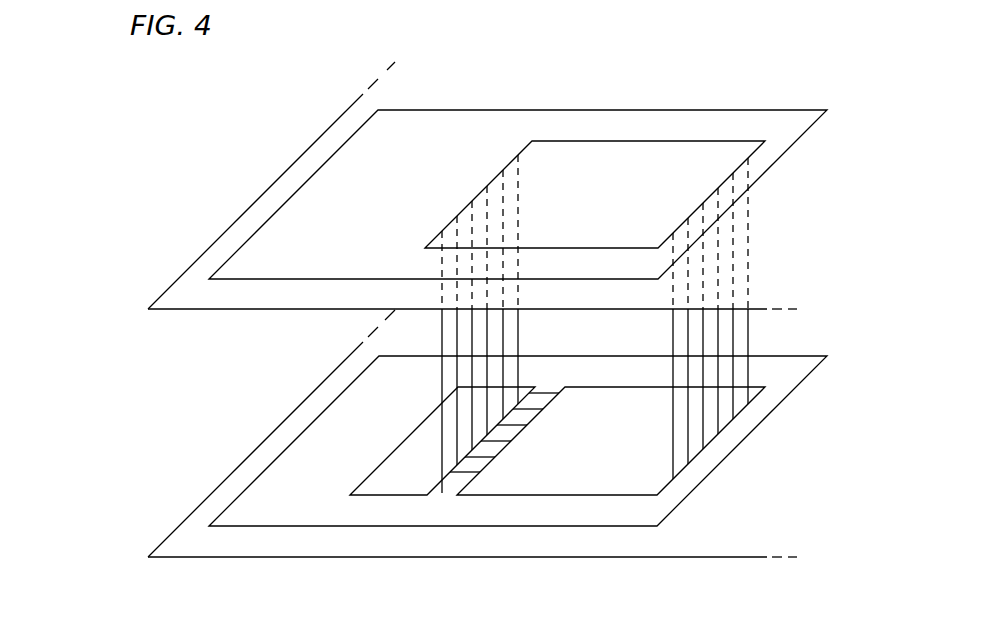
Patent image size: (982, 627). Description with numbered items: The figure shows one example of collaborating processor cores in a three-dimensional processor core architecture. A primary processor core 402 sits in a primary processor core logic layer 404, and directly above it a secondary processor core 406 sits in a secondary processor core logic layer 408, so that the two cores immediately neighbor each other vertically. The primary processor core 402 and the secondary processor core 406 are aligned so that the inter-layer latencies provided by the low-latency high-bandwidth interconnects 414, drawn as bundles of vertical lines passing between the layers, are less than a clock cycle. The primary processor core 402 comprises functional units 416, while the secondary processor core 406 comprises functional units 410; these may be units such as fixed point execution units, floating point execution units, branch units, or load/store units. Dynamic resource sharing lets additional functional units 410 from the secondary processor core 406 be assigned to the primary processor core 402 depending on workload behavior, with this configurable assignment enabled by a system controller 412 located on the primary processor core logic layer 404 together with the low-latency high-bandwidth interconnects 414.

The primary processor core 402 is at (310, 487).
The primary processor core logic layer 404 is at (292, 432).
The secondary processor core 406 is at (303, 230).
The secondary processor core logic layer 408 is at (293, 173).
The functional units 410 is at (627, 173).
The system controller 412 is at (396, 476).
The low-latency high-bandwidth interconnects 414 is at (750, 332).
The functional units 416 is at (580, 475).